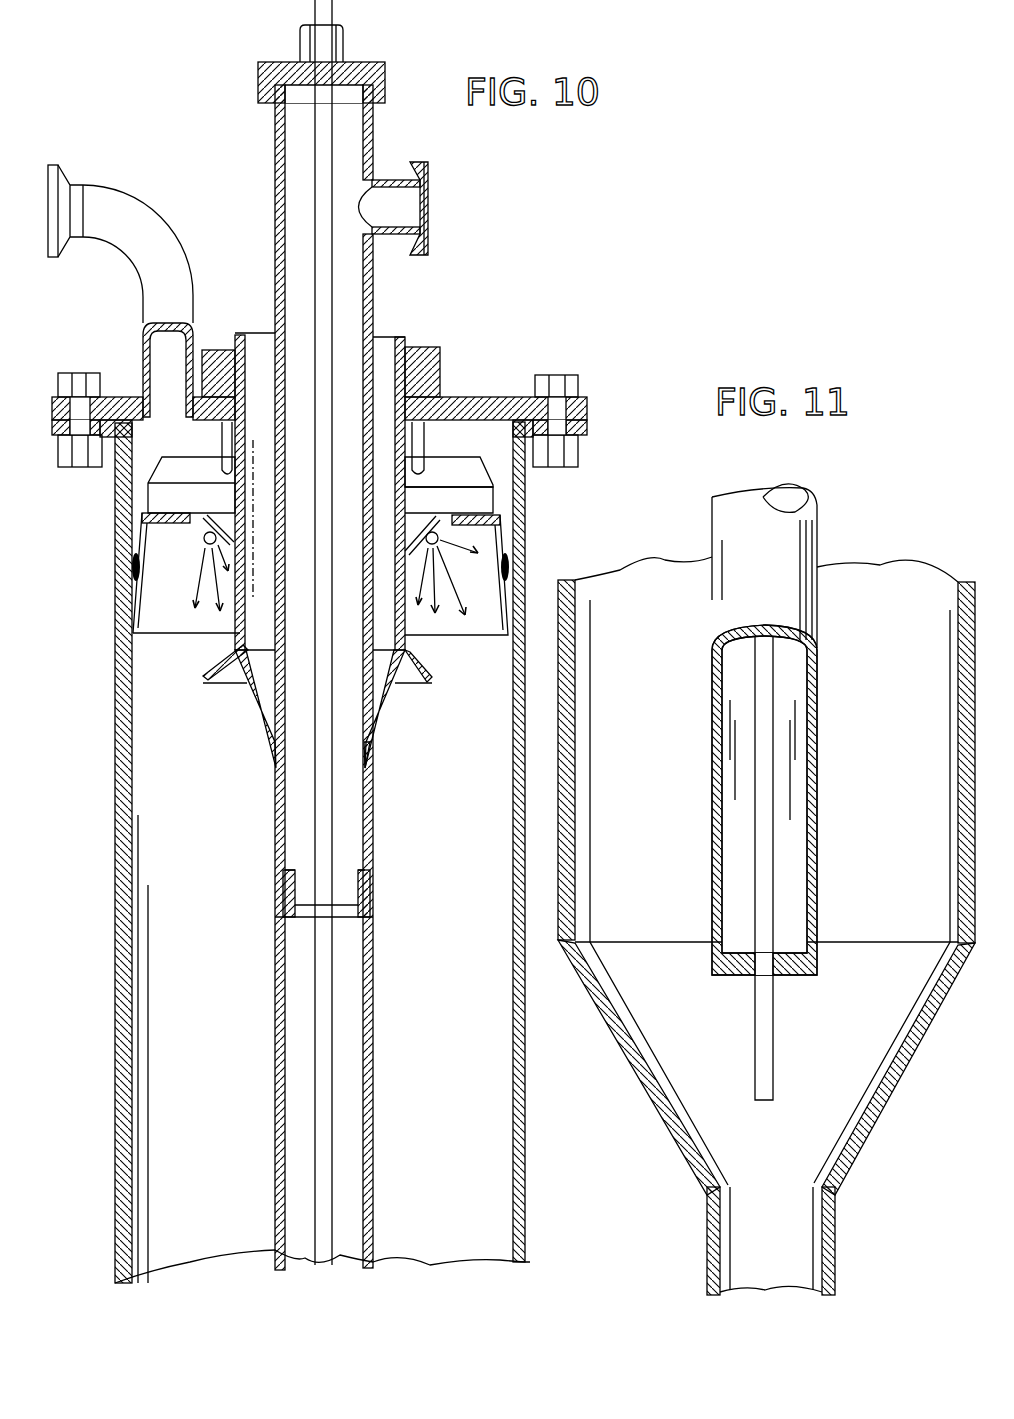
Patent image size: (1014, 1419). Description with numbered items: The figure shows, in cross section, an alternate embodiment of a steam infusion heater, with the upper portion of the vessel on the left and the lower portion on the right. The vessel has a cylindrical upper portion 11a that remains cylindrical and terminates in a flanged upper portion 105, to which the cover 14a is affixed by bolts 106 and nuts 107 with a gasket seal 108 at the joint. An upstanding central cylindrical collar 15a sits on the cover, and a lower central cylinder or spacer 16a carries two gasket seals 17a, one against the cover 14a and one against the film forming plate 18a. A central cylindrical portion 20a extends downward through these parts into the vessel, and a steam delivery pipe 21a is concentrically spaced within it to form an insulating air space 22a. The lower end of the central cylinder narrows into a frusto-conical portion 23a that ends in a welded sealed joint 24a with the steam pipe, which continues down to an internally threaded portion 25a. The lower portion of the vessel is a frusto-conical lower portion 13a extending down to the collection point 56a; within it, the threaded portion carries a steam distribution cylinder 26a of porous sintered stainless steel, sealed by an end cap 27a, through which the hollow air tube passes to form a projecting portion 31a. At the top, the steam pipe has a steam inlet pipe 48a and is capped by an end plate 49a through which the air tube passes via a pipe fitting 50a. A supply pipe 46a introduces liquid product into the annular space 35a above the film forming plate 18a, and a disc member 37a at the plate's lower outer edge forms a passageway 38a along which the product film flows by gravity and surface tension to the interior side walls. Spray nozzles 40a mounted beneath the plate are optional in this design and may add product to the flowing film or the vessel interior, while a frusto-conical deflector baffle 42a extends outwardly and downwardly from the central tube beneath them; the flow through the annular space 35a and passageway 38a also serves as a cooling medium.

In FIG. 10, the cylindrical upper portion 11a is at (118, 652).
In FIG. 11, the frusto-conical lower portion 13a is at (657, 1087).
In FIG. 10, the cover 14a is at (492, 433).
In FIG. 10, the upstanding central cylindrical collar 15a is at (430, 365).
In FIG. 10, the lower central cylinder 16a is at (225, 437).
In FIG. 10, the gasket seals 17a is at (410, 452).
In FIG. 10, the film forming plate 18a is at (480, 499).
In FIG. 10, the central cylindrical portion 20a is at (400, 337).
In FIG. 10, the steam delivery pipe 21a is at (373, 271).
In FIG. 10, the insulating air space 22a is at (258, 360).
In FIG. 10, the frusto-conical portion 23a is at (390, 708).
In FIG. 10, the welded sealed joint 24a is at (375, 757).
In FIG. 10, the internally threaded portion 25a is at (372, 898).
In FIG. 11, the steam distribution cylinder 26a is at (805, 613).
In FIG. 11, the end cap 27a is at (792, 978).
In FIG. 11, the projecting portion 31a is at (768, 1079).
In FIG. 10, the annular space 35a is at (143, 445).
In FIG. 10, the disc member 37a is at (133, 600).
In FIG. 10, the passageway 38a is at (130, 615).
In FIG. 10, the spray nozzles 40a is at (206, 548).
In FIG. 10, the deflector baffle 42a is at (410, 657).
In FIG. 10, the supply pipe 46a is at (102, 197).
In FIG. 10, the steam inlet pipe 48a is at (430, 168).
In FIG. 10, the end plate 49a is at (262, 68).
In FIG. 10, the pipe fitting 50a is at (345, 35).
In FIG. 11, the collection point 56a is at (835, 1232).
In FIG. 10, the flanged upper portion 105 is at (585, 423).
In FIG. 10, the bolts 106 is at (560, 377).
In FIG. 10, the nuts 107 is at (578, 456).
In FIG. 10, the gasket seal 108 is at (122, 440).